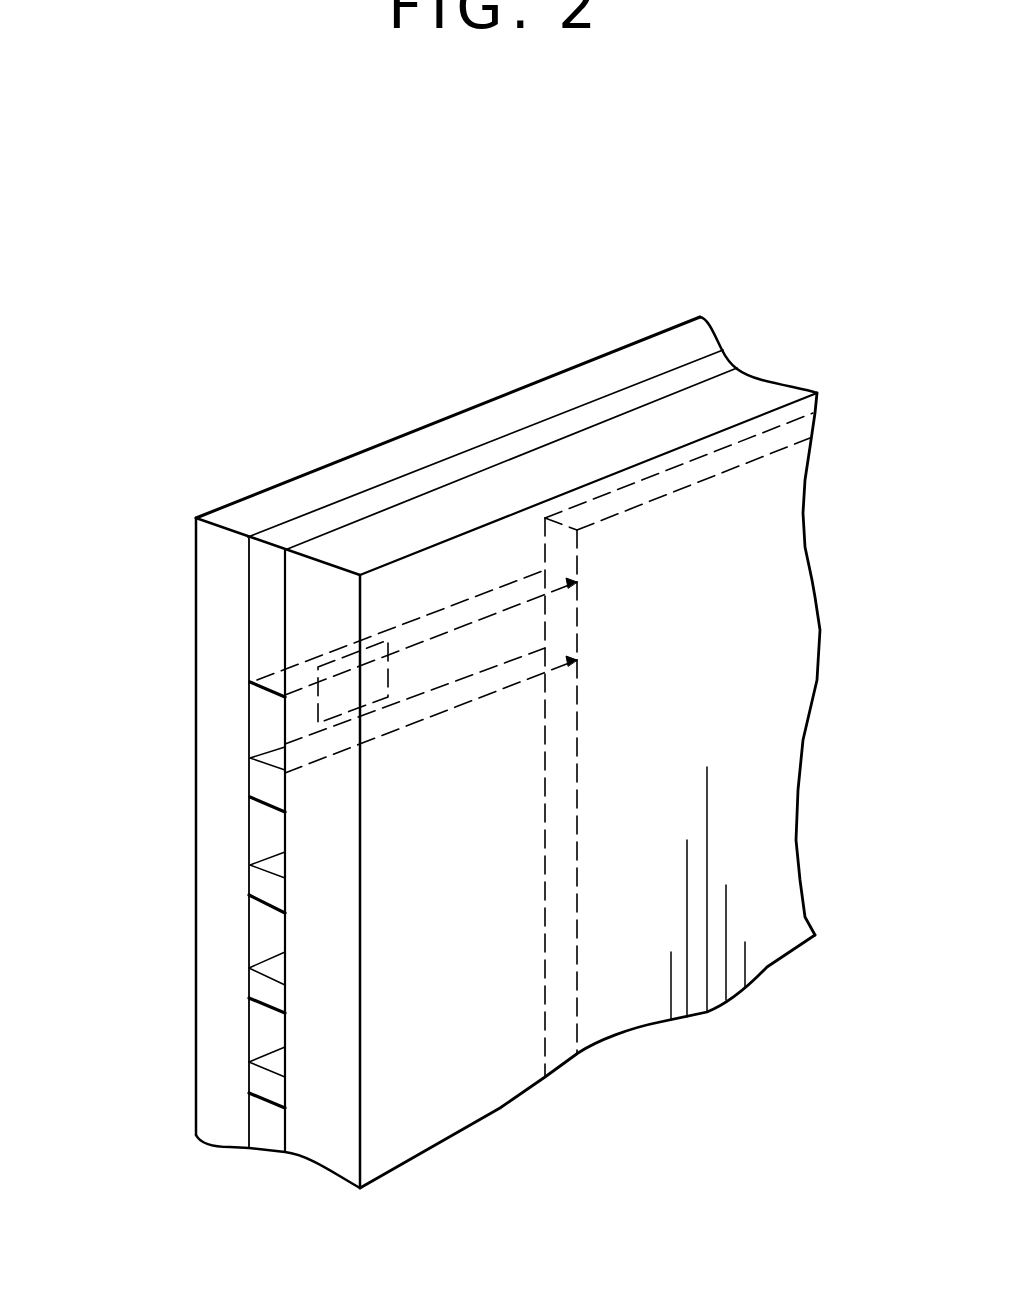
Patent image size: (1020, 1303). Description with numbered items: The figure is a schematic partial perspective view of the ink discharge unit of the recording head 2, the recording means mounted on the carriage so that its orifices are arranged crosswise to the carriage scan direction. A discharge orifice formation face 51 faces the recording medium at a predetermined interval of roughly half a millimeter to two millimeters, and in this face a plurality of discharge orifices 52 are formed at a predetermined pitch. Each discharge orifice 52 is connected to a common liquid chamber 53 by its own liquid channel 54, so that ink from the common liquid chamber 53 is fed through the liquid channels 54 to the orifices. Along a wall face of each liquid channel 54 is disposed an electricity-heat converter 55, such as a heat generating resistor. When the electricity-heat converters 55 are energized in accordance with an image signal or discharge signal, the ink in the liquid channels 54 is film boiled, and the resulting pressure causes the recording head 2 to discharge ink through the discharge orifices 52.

The recording head 2 is at (433, 425).
The discharge orifice formation face 51 is at (258, 983).
The discharge orifices 52 is at (255, 828).
The common liquid chamber 53 is at (794, 598).
The liquid channel 54 is at (435, 675).
The electricity-heat converters 55 is at (388, 697).